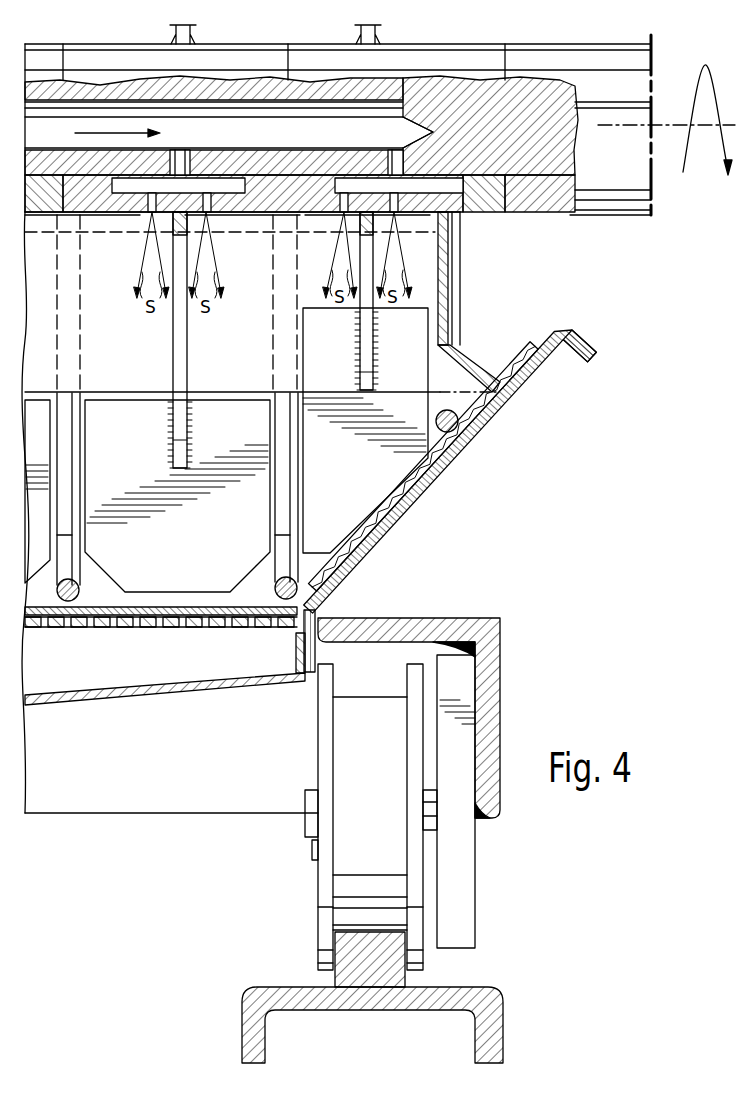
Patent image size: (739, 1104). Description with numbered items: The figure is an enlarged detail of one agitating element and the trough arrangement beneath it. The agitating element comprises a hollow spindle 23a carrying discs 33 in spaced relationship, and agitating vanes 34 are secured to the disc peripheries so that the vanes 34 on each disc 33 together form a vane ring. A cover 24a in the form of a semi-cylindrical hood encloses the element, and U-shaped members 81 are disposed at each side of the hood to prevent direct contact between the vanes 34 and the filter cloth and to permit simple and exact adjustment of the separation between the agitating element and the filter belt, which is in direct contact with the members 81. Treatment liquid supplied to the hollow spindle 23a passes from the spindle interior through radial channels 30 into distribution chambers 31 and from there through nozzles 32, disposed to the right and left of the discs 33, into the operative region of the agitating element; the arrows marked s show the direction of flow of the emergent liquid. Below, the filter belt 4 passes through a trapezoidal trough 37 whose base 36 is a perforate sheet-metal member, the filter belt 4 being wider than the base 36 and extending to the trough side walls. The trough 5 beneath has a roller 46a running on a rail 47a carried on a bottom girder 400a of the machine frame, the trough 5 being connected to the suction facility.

The spindle 23a is at (552, 238).
The radial channel 30 is at (401, 160).
The distribution chamber 31 is at (237, 190).
The nozzle 32 is at (209, 217).
The disc 33 is at (193, 30).
The cover 24a is at (500, 346).
The agitating vane 34 is at (226, 450).
The U-shaped member 81 is at (452, 432).
The filter belt 4 is at (540, 360).
The trapezoidal trough 37 is at (520, 402).
The base 36 is at (176, 622).
The trough 5 is at (120, 699).
The roller 46a is at (346, 725).
The rail 47a is at (343, 980).
The bottom girder 400a is at (488, 1007).